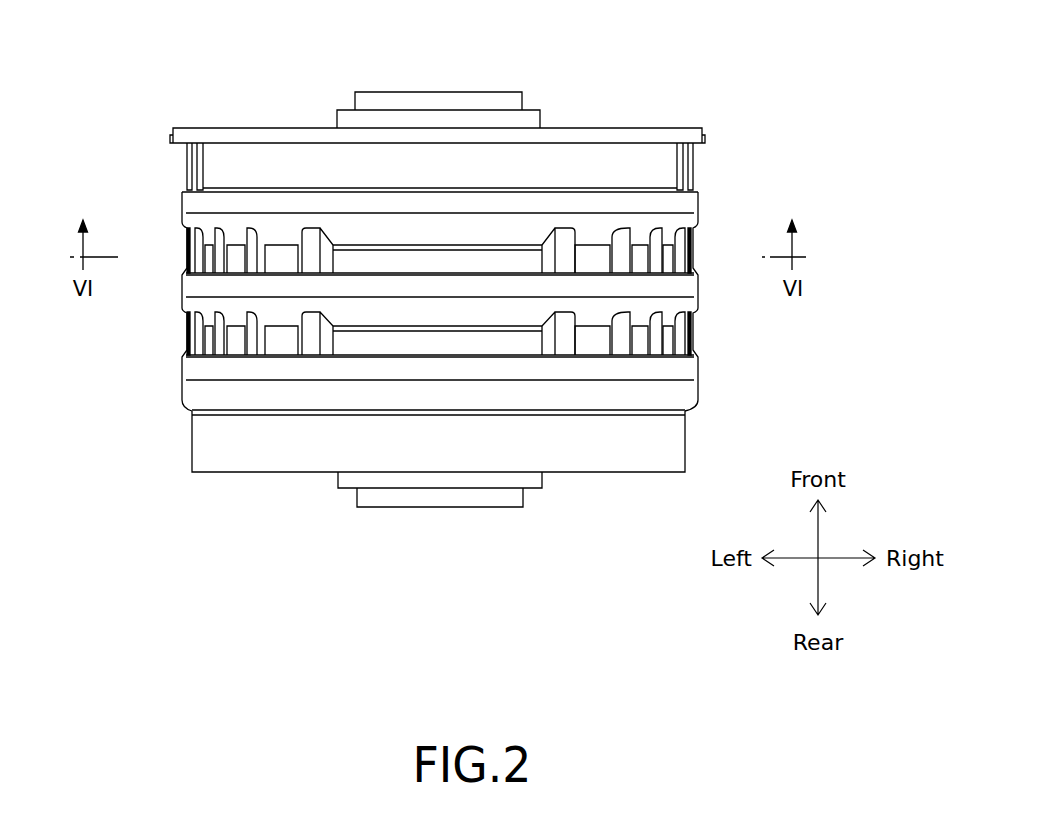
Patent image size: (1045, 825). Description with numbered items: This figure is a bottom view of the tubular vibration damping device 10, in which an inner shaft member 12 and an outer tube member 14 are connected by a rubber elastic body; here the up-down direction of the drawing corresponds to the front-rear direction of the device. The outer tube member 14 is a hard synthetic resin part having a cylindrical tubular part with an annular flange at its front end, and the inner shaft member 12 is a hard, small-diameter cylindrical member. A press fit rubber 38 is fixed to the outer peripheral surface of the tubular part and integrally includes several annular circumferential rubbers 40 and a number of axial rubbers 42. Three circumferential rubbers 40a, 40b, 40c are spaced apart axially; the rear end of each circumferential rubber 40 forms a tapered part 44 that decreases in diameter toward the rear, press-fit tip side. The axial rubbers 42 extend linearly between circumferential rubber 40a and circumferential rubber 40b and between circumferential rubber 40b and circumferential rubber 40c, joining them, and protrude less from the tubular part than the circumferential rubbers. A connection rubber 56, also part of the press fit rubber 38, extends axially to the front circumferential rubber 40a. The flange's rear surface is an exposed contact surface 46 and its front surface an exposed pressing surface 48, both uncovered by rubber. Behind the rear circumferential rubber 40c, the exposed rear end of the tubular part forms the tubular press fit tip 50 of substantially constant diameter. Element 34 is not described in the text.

The tubular vibration damping device 10 is at (708, 78).
The inner shaft member 12 is at (492, 80).
The outer tube member 14 is at (700, 448).
The upper protrusion 34 is at (430, 118).
The press fit rubber 38 is at (402, 425).
The circumferential rubber 40 is at (365, 311).
The circumferential rubber 40a is at (172, 192).
The circumferential rubber 40b is at (172, 303).
The circumferential rubber 40c is at (178, 411).
The axial rubber 42 is at (260, 248).
The tapered part 44 is at (595, 227).
The contact surface 46 is at (243, 157).
The pressing surface 48 is at (197, 127).
The press fit tip 50 is at (237, 447).
The connection rubber 56 is at (190, 168).